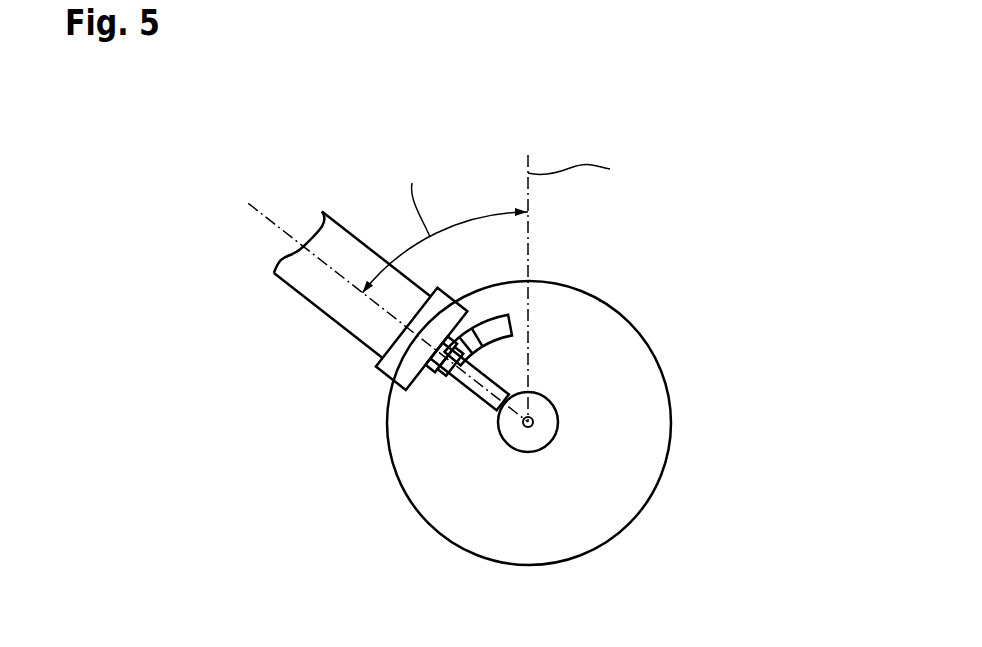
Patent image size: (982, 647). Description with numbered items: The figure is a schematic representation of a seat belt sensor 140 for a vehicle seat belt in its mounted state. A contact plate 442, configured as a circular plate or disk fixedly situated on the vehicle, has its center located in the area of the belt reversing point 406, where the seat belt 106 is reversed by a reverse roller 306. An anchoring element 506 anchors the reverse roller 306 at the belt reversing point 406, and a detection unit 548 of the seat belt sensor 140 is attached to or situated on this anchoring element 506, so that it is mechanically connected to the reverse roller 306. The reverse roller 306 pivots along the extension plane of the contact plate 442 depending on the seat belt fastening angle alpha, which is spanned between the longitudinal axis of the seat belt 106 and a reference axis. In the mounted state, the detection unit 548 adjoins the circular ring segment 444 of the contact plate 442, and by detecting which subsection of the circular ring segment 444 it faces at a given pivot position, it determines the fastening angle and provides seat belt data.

The seat belt sensor 140 is at (702, 120).
The seat belt 106 is at (363, 312).
The reverse roller 306 is at (385, 378).
The detection unit 548 is at (446, 370).
The anchoring element 506 is at (490, 408).
The belt reversing point 406 is at (556, 423).
The contact plate 442 is at (573, 361).
The circular ring segment 444 is at (505, 322).